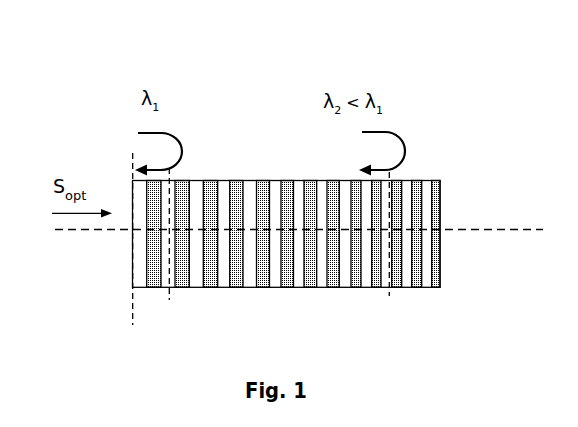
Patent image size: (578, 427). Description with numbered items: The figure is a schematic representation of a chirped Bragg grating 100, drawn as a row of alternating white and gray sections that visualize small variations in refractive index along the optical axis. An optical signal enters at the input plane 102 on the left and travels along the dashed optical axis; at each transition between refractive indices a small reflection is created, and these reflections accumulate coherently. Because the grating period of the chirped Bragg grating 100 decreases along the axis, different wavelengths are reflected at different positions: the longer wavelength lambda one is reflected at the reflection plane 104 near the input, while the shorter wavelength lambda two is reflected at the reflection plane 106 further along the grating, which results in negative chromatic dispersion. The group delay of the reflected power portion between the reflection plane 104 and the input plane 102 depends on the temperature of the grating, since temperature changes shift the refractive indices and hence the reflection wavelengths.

The chirped Bragg grating 100 is at (275, 88).
The input plane 102 is at (132, 304).
The reflection plane 104 is at (170, 295).
The reflection plane 106 is at (388, 293).